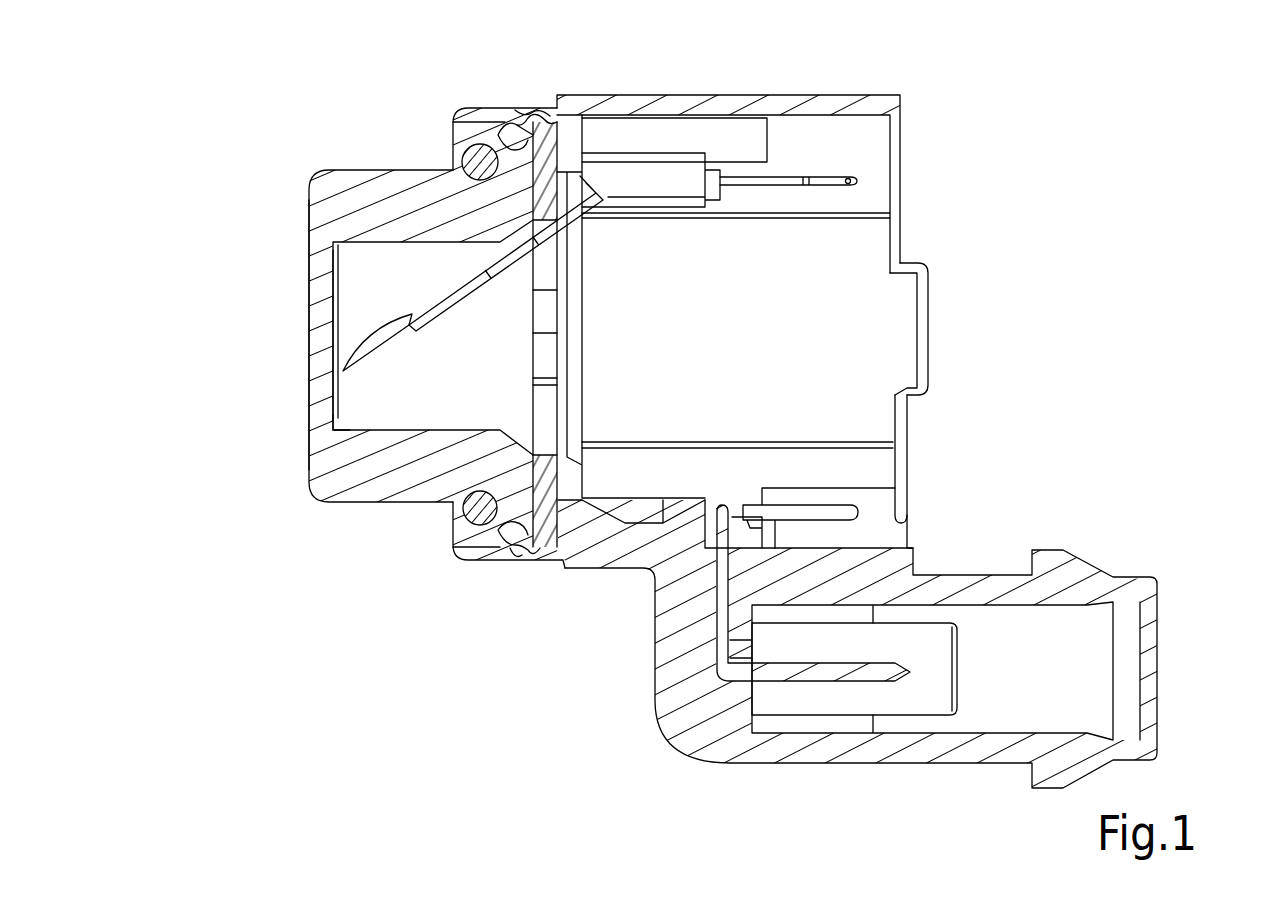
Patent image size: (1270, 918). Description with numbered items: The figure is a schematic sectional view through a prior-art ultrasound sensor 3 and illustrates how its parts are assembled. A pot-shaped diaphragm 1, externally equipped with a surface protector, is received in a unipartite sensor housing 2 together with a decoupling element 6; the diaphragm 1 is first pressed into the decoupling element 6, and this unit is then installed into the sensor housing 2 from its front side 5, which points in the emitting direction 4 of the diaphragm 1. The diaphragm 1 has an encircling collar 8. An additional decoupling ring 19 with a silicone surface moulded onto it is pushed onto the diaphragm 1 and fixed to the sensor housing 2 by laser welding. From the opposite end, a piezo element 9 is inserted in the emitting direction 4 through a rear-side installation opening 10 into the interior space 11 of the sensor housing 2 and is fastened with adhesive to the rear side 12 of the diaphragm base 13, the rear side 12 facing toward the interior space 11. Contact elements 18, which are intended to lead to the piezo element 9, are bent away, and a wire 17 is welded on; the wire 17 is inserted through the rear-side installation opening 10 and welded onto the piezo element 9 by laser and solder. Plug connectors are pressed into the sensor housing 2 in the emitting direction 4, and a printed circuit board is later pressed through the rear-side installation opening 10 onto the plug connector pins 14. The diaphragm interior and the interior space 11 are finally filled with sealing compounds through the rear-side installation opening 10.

The pot-shaped diaphragm 1 is at (342, 170).
The sensor housing 2 is at (770, 95).
The ultrasound sensor 3 is at (955, 165).
The emitting direction 4 is at (142, 342).
The front side 5 is at (460, 572).
The decoupling element 6 is at (520, 115).
The encircling collar 8 is at (522, 545).
The piezo element 9 is at (330, 290).
The rear-side installation opening 10 is at (866, 318).
The interior space 11 is at (622, 322).
The rear side 12 is at (335, 415).
The diaphragm base 13 is at (330, 397).
The plug connector pins 14 is at (832, 185).
The wire 17 is at (385, 330).
The contact elements 18 is at (478, 292).
The decoupling ring 19 is at (471, 118).